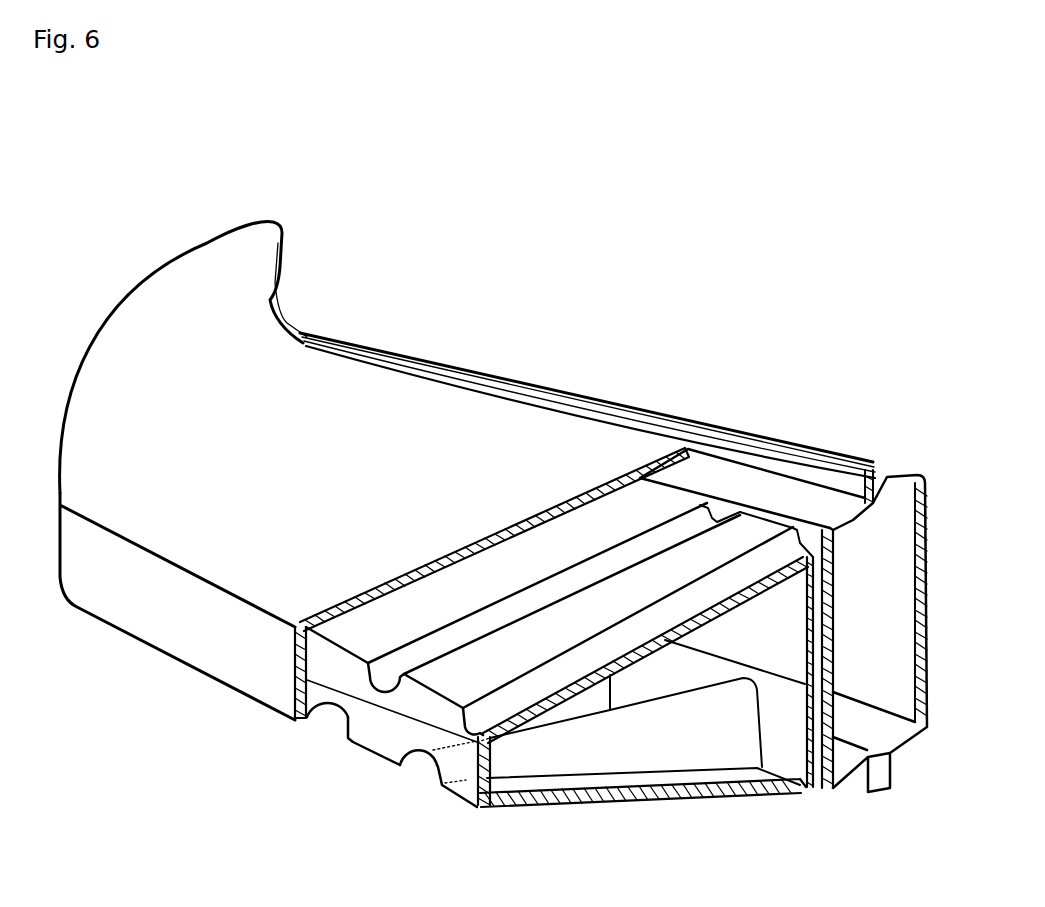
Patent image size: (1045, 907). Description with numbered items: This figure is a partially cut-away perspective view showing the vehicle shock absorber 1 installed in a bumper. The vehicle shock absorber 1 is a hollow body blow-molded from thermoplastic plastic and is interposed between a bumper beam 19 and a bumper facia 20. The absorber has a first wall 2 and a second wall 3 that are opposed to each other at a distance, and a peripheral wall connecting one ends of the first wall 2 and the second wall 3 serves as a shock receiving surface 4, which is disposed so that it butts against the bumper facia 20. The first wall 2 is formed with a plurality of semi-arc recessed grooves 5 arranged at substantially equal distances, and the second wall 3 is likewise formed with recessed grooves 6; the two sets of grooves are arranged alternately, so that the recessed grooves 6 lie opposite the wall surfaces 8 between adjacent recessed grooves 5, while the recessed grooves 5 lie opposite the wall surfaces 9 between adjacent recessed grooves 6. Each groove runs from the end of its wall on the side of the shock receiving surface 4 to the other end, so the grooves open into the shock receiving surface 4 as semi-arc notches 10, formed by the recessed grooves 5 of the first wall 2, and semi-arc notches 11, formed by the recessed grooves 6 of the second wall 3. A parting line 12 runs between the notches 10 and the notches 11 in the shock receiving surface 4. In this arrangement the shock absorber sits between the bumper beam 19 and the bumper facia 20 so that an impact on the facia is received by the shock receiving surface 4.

The vehicle shock absorber 1 is at (311, 752).
The first wall 2 is at (498, 568).
The second wall 3 is at (708, 796).
The shock receiving surface 4 is at (377, 733).
The recessed grooves 5 is at (572, 582).
The recessed grooves 6 is at (632, 740).
The wall surfaces 8 is at (438, 597).
The wall surfaces 9 is at (378, 755).
The semi-arc notches 10 is at (365, 672).
The semi-arc notches 11 is at (418, 768).
The parting line 12 is at (457, 790).
The bumper beam 19 is at (917, 473).
The bumper facia 20 is at (173, 630).